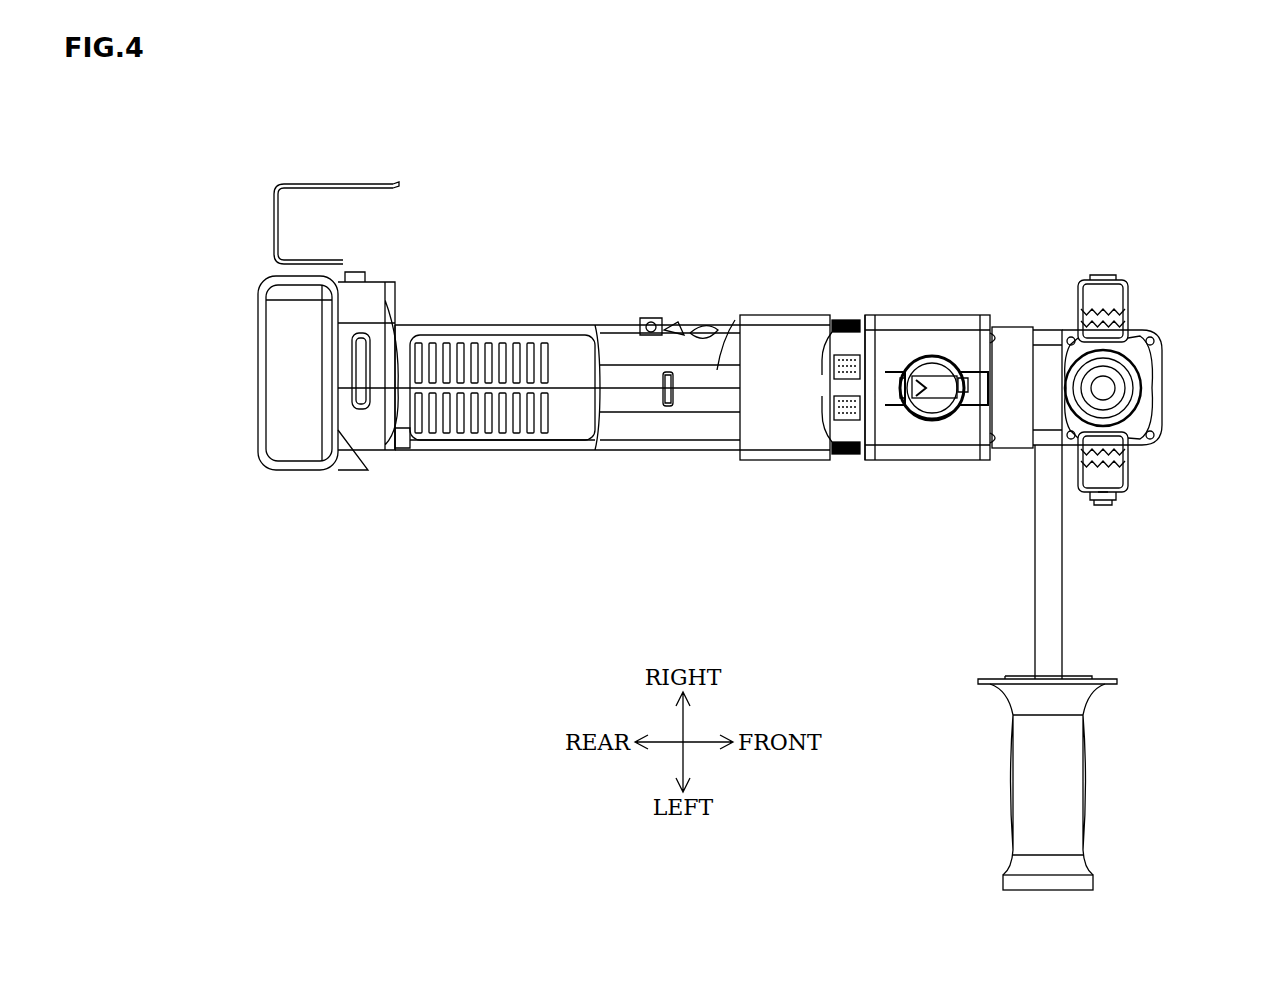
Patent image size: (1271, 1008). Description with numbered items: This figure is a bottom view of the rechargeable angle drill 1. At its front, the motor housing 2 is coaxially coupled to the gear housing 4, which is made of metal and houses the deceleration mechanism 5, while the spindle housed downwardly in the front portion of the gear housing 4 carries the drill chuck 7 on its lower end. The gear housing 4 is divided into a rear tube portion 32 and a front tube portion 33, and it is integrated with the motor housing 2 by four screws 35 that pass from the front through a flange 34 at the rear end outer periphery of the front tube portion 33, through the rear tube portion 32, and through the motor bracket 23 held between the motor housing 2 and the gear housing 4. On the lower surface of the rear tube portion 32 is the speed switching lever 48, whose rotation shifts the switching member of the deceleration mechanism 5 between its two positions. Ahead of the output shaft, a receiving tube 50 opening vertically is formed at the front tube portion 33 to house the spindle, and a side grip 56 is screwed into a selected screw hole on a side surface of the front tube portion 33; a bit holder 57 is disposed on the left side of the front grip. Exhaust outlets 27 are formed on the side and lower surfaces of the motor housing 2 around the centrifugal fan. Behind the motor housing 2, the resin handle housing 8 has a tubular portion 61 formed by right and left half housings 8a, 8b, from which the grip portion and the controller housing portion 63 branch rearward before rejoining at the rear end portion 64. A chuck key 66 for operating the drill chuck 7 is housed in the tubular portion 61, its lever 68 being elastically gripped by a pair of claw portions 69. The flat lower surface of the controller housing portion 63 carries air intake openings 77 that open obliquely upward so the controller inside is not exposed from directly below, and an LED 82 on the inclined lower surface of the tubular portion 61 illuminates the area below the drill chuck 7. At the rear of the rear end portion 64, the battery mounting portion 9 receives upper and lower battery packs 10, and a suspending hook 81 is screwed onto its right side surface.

The rechargeable angle drill 1 is at (871, 176).
The motor housing 2 is at (766, 325).
The gear housing 4 is at (1027, 312).
The deceleration mechanism 5 is at (1112, 300).
The drill chuck 7 is at (1133, 393).
The handle housing 8 is at (565, 325).
The right half housing 8a is at (517, 450).
The left half housing 8b is at (523, 325).
The battery mounting portion 9 is at (362, 310).
The battery pack 10 is at (300, 460).
The motor bracket 23 is at (866, 315).
The exhaust outlets 27 is at (836, 320).
The rear tube portion 32 is at (925, 320).
The front tube portion 33 is at (1020, 440).
The flange 34 is at (988, 320).
The screws 35 is at (1000, 327).
The speed switching lever 48 is at (938, 400).
The receiving tube 50 is at (1155, 362).
The side grip 56 is at (1068, 790).
The bit holder 57 is at (1103, 508).
The tubular portion 61 is at (735, 320).
The controller housing portion 63 is at (430, 335).
The rear end portion 64 is at (405, 448).
The chuck key 66 is at (646, 322).
The lever 68 is at (652, 322).
The claw portions 69 is at (672, 325).
The air intake openings 77 is at (418, 360).
The hook 81 is at (350, 184).
The LED 82 is at (668, 406).